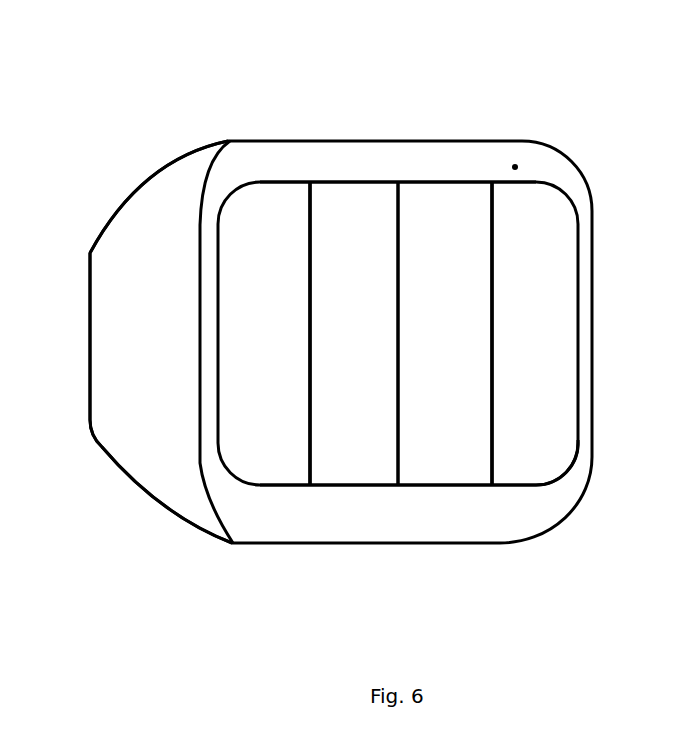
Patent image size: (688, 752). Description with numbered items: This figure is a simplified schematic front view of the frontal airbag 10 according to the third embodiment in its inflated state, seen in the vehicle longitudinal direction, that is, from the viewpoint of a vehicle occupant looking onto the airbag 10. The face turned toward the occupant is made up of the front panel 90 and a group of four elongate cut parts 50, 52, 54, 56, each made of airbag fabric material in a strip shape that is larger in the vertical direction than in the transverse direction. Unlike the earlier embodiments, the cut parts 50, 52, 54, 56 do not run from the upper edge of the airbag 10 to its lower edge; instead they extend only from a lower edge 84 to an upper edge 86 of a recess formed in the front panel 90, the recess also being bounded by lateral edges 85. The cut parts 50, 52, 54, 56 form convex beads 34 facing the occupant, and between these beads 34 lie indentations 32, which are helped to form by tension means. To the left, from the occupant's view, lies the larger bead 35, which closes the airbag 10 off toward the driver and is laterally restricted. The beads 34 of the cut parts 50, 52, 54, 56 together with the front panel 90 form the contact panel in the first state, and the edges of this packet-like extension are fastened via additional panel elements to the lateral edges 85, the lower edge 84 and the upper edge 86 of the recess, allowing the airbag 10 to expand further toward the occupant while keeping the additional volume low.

The frontal airbag 10 is at (597, 135).
The indentations 32 is at (492, 235).
The beads 34 is at (255, 347).
The larger bead 35 is at (133, 347).
The cut part 50 is at (278, 438).
The cut part 52 is at (360, 440).
The cut part 54 is at (433, 440).
The cut part 56 is at (530, 440).
The lower edge 84 is at (407, 492).
The lateral edges 85 is at (217, 303).
The upper edge 86 is at (478, 174).
The front panel 90 is at (516, 165).